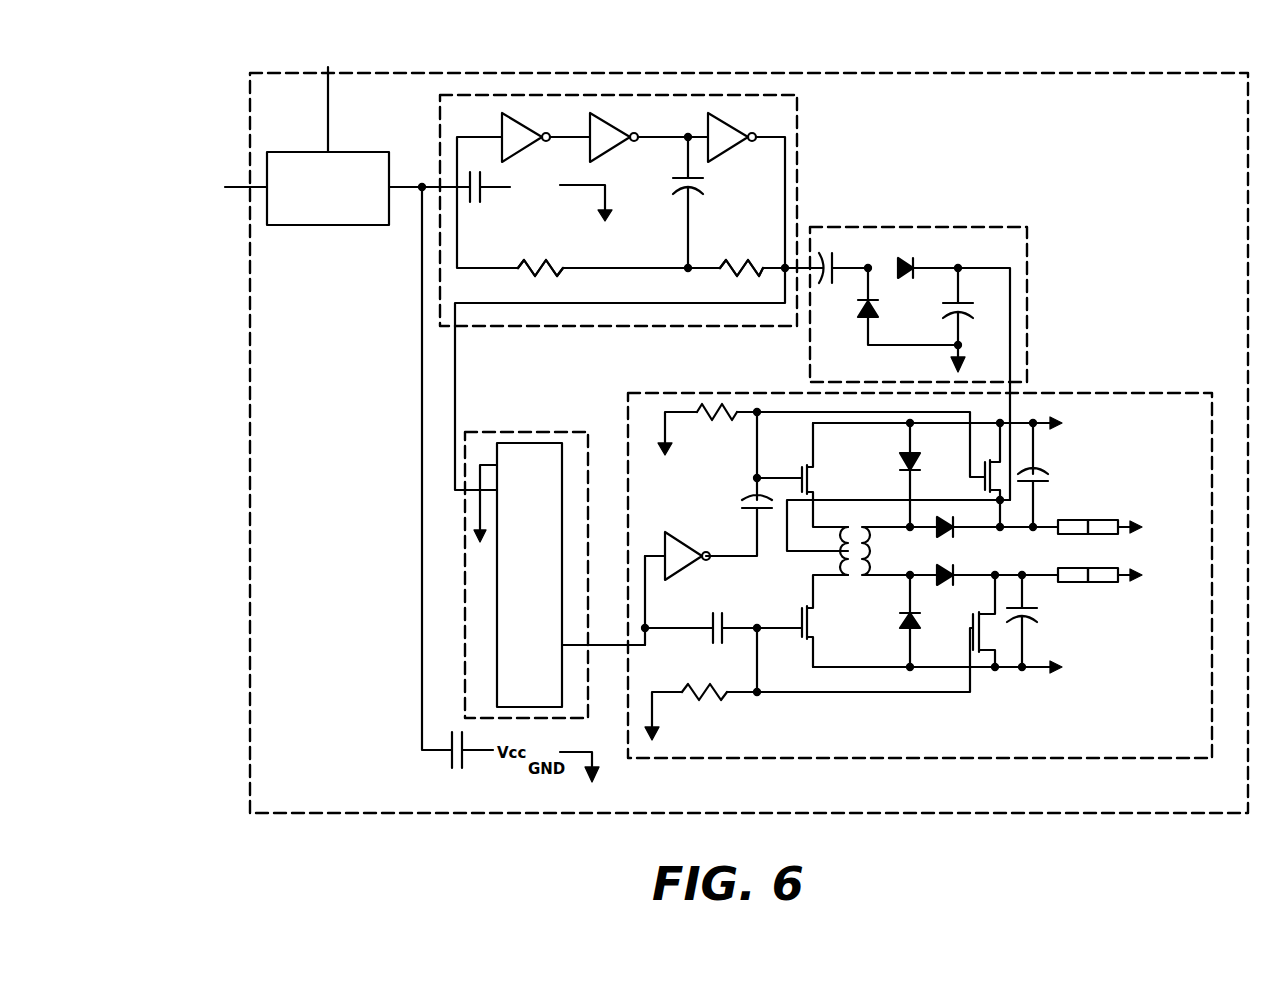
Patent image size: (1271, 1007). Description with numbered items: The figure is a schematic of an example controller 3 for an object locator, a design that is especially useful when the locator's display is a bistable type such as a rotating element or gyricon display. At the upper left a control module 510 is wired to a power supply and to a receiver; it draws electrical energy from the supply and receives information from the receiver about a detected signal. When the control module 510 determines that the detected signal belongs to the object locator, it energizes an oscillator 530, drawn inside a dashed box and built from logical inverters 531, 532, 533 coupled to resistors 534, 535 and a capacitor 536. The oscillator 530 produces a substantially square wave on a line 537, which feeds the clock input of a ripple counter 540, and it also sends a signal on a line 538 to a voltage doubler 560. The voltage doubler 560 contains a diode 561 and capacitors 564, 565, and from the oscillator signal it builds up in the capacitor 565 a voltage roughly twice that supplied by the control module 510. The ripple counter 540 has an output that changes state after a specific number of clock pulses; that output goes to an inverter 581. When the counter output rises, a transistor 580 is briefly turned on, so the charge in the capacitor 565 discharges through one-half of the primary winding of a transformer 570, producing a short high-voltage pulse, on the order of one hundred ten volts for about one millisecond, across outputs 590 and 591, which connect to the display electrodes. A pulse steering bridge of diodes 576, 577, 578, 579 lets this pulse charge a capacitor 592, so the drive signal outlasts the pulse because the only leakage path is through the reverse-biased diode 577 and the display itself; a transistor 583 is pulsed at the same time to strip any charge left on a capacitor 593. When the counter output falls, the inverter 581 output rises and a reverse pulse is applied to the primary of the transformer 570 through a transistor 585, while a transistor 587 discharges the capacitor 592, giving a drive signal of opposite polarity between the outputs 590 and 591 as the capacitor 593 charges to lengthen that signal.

The controller 3 is at (250, 362).
The control module 510 is at (338, 226).
The oscillator 530 is at (438, 149).
The logical inverter 531 is at (529, 152).
The logical inverter 532 is at (617, 121).
The logical inverter 533 is at (722, 153).
The resistor 534 is at (550, 262).
The resistor 535 is at (737, 262).
The capacitor 536 is at (676, 177).
The line 537 is at (660, 303).
The line 538 is at (803, 265).
The ripple counter 540 is at (528, 432).
The voltage doubler 560 is at (1027, 249).
The diode 561 is at (907, 258).
The capacitor 564 is at (835, 262).
The capacitor 565 is at (971, 311).
The transformer 570 is at (856, 578).
The diode 576 is at (905, 455).
The diode 577 is at (944, 539).
The diode 578 is at (984, 593).
The diode 579 is at (897, 629).
The transistor 580 is at (799, 621).
The inverter 581 is at (688, 539).
The transistor 583 is at (977, 617).
The transistor 585 is at (799, 471).
The transistor 587 is at (981, 487).
The output 590 is at (1100, 519).
The output 591 is at (1095, 583).
The capacitor 592 is at (1046, 476).
The capacitor 593 is at (1037, 609).